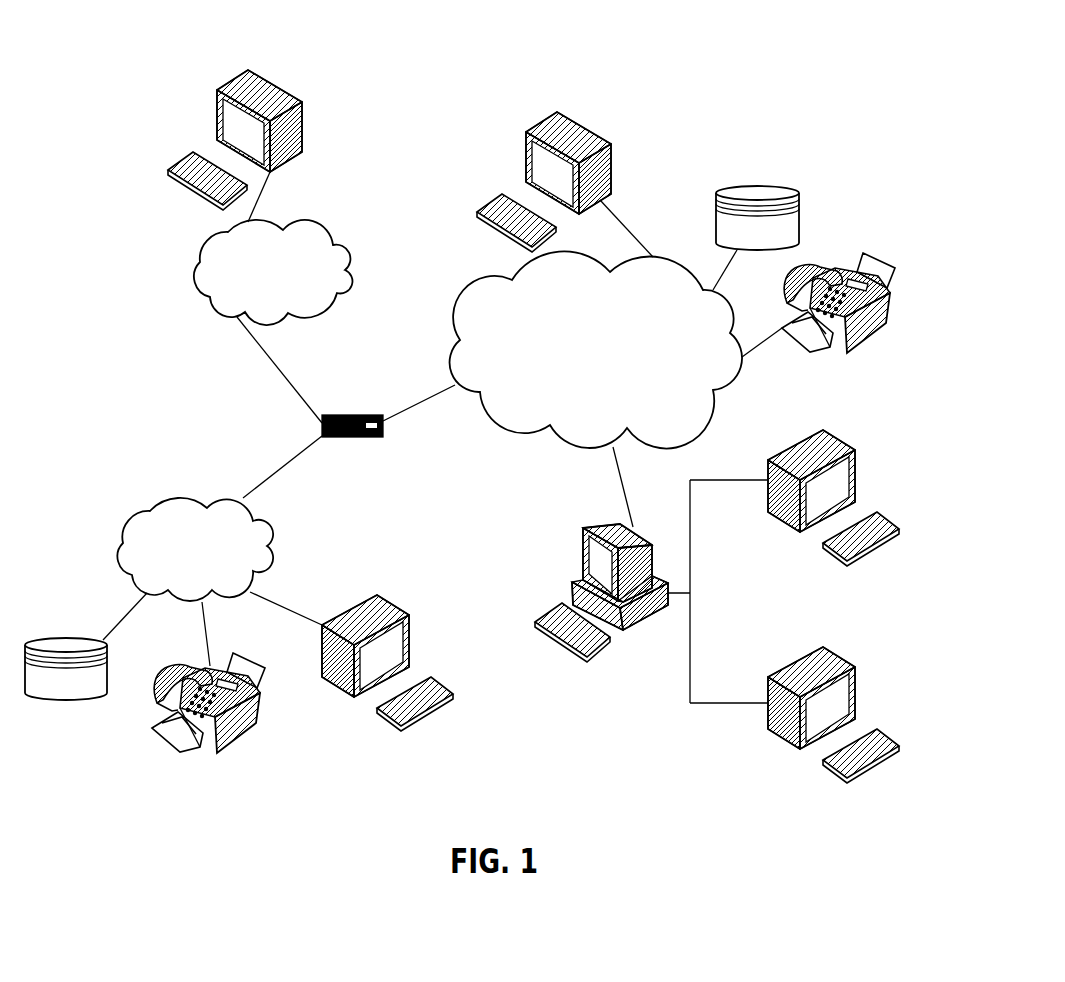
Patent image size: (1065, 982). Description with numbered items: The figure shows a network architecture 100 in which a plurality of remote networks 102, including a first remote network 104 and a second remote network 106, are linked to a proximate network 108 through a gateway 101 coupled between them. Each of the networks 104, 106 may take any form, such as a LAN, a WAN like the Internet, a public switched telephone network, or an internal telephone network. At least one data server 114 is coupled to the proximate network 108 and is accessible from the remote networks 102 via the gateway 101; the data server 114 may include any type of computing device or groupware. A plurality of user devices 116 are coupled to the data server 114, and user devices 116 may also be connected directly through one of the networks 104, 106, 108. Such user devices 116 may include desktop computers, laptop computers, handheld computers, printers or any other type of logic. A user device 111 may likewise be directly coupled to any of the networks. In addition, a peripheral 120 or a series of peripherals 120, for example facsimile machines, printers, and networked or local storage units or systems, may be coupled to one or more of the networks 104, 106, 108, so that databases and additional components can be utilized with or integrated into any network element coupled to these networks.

The architecture 100 is at (145, 55).
The gateway 101 is at (333, 414).
The remote networks 102 is at (176, 331).
The first remote network 104 is at (126, 523).
The second remote network 106 is at (343, 243).
The proximate network 108 is at (703, 418).
The user device 111 is at (611, 145).
The data server 114 is at (583, 545).
The user devices 116 is at (303, 111).
The peripheral 120 is at (800, 195).